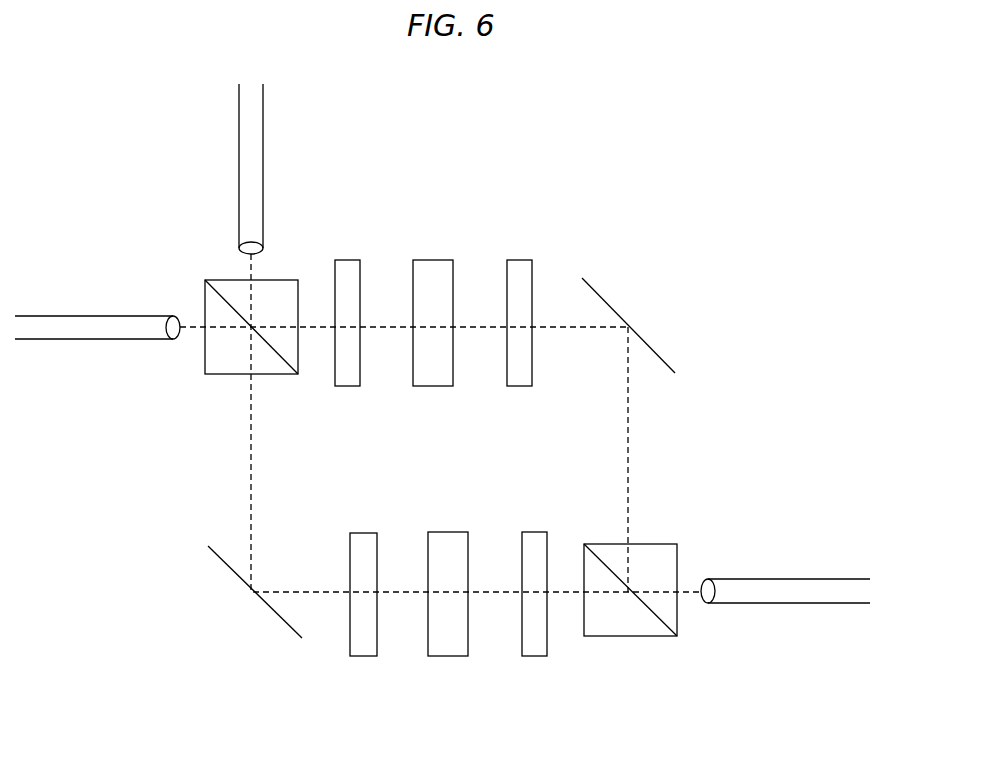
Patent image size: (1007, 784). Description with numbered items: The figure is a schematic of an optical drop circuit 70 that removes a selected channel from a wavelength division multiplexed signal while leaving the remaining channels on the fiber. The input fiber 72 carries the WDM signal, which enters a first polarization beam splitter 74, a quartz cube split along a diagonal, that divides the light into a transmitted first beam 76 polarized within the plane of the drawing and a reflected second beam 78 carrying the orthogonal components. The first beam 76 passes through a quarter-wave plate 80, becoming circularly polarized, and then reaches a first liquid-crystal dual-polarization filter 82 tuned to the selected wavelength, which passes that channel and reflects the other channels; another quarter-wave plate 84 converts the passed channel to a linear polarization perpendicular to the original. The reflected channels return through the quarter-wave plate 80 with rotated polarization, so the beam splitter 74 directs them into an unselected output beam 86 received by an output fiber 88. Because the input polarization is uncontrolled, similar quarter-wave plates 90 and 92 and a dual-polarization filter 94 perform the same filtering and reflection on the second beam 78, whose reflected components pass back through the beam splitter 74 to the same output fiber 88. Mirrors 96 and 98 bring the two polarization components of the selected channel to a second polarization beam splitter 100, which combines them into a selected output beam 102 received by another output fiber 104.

The optical drop circuit 70 is at (327, 682).
The input optical fiber 72 is at (92, 334).
The first polarization beam splitter 74 is at (220, 373).
The first beam 76 is at (313, 325).
The second beam 78 is at (252, 432).
The quarter-wave plate 80 is at (347, 259).
The first liquid-crystal dual-polarization filter 82 is at (437, 259).
The quarter-wave plate 84 is at (523, 259).
The unselected output beam 86 is at (244, 263).
The output fiber 88 is at (255, 139).
The quarter-wave plate 90 is at (363, 532).
The quarter-wave plate 92 is at (537, 531).
The dual-polarization filter 94 is at (450, 531).
The mirror 96 is at (608, 303).
The mirror 98 is at (228, 567).
The second polarization beam splitter 100 is at (630, 635).
The selected output beam 102 is at (685, 590).
The output fiber 104 is at (777, 583).